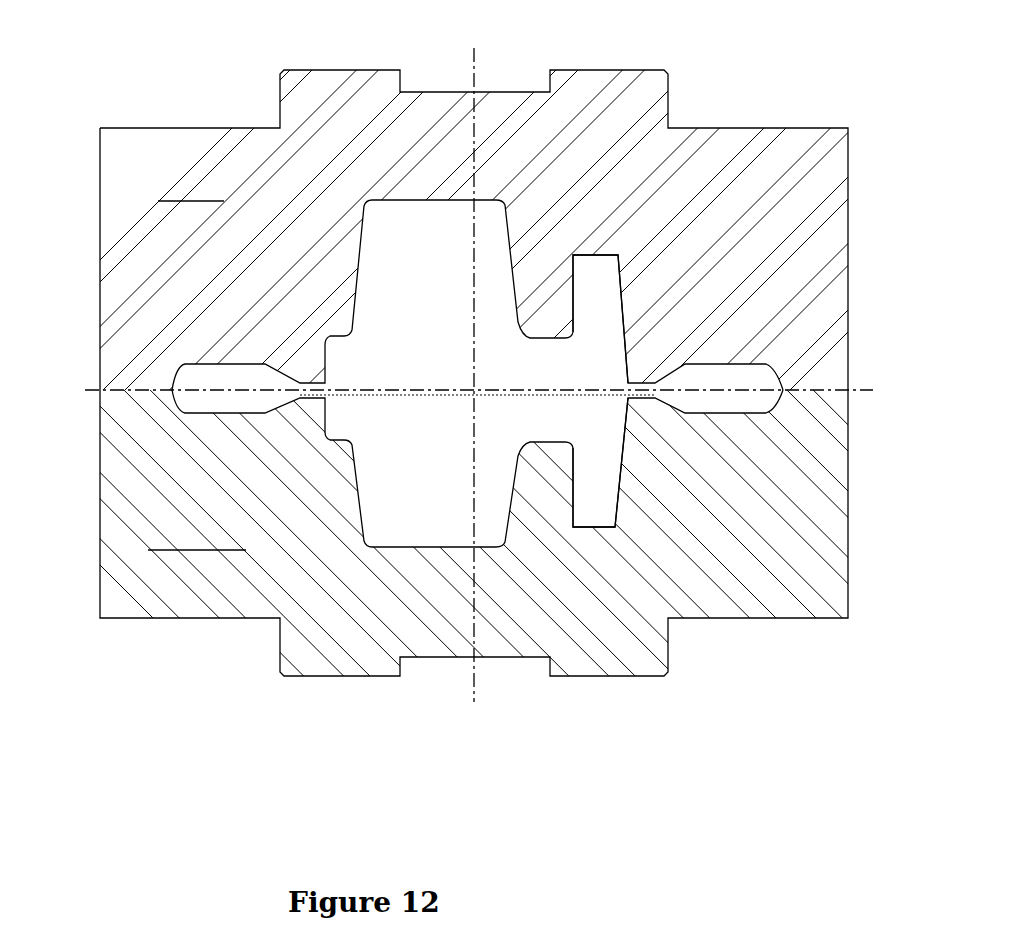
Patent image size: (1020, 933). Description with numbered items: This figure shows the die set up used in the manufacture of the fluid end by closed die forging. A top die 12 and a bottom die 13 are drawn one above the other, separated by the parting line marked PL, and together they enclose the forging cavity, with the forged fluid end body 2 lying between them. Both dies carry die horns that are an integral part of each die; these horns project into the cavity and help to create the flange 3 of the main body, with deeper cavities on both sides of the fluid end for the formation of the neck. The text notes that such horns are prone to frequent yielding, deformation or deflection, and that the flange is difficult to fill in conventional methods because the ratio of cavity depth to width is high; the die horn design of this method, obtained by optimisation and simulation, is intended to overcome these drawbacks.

The top die 12 is at (148, 167).
The bottom die 13 is at (250, 506).
The die cavity / forged part 2 is at (383, 325).
The flange 3 is at (600, 318).